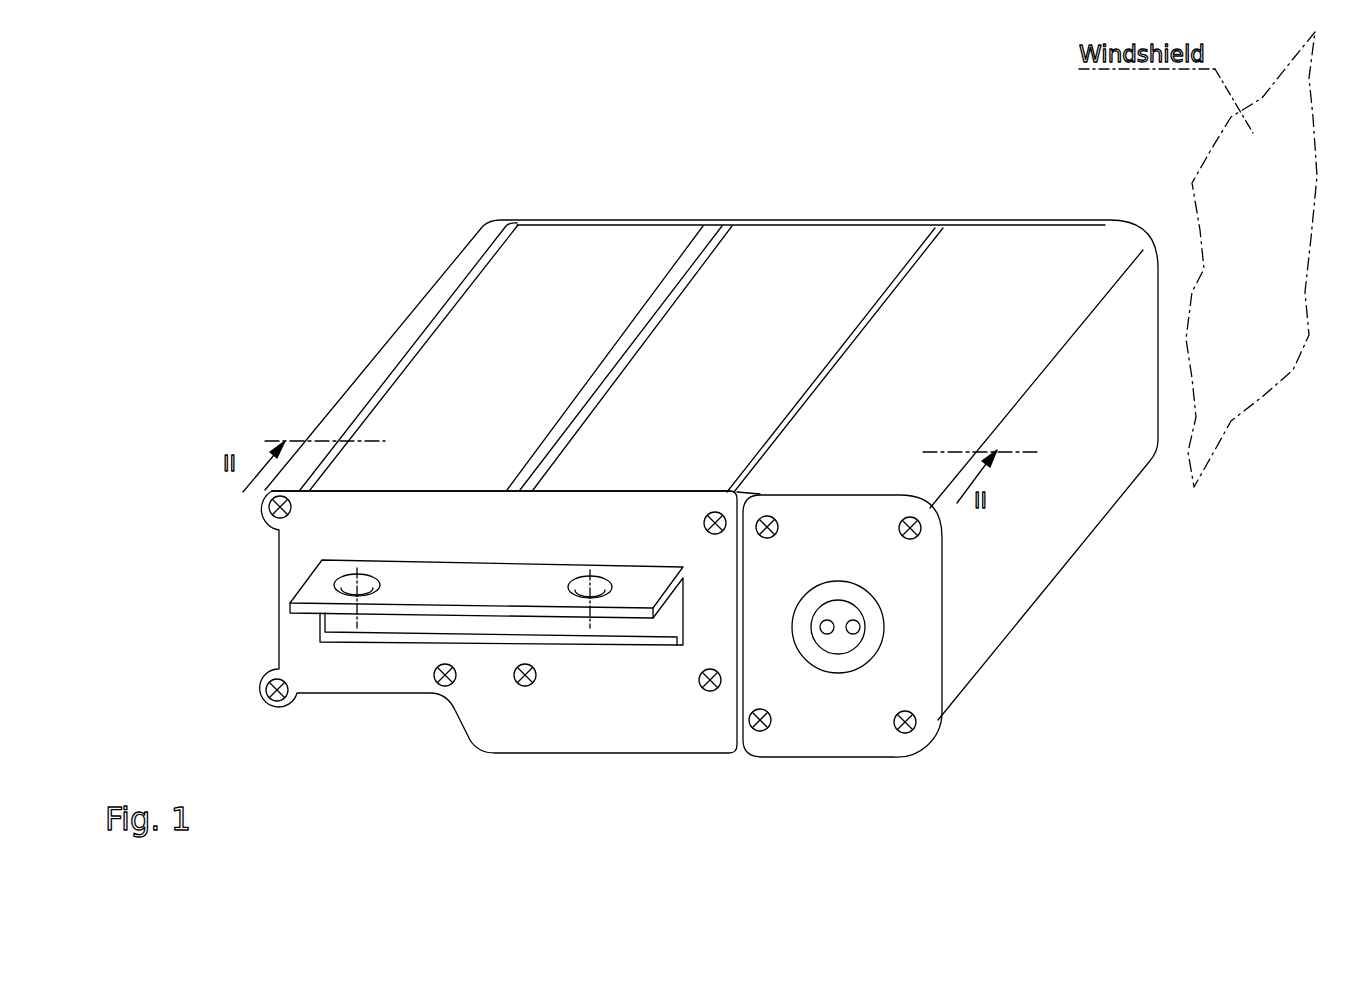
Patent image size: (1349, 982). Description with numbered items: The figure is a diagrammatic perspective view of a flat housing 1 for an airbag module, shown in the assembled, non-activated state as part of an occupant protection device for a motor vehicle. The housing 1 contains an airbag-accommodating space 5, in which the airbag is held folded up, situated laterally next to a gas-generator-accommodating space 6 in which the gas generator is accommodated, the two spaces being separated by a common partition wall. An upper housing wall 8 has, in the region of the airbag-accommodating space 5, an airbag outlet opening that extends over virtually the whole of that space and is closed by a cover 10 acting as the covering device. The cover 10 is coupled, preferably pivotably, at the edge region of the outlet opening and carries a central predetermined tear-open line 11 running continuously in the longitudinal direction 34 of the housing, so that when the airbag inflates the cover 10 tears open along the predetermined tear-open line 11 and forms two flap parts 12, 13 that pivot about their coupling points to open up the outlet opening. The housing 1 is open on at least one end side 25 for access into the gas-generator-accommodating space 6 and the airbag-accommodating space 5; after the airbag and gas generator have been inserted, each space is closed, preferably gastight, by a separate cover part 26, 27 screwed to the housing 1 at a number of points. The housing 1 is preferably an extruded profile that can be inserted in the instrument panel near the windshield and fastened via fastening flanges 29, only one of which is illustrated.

The housing 1 is at (1037, 264).
The airbag-accommodating space 5 is at (284, 560).
The gas-generator-accommodating space 6 is at (837, 703).
The upper housing wall 8 is at (943, 292).
The cover 10 is at (462, 399).
The predetermined tear-open line 11 is at (643, 325).
The flap part 12 is at (572, 268).
The flap part 13 is at (823, 276).
The end side 25 is at (545, 710).
The cover part 26 is at (623, 700).
The cover part 27 is at (908, 655).
The fastening flange 29 is at (417, 585).
The longitudinal direction 34 is at (695, 351).